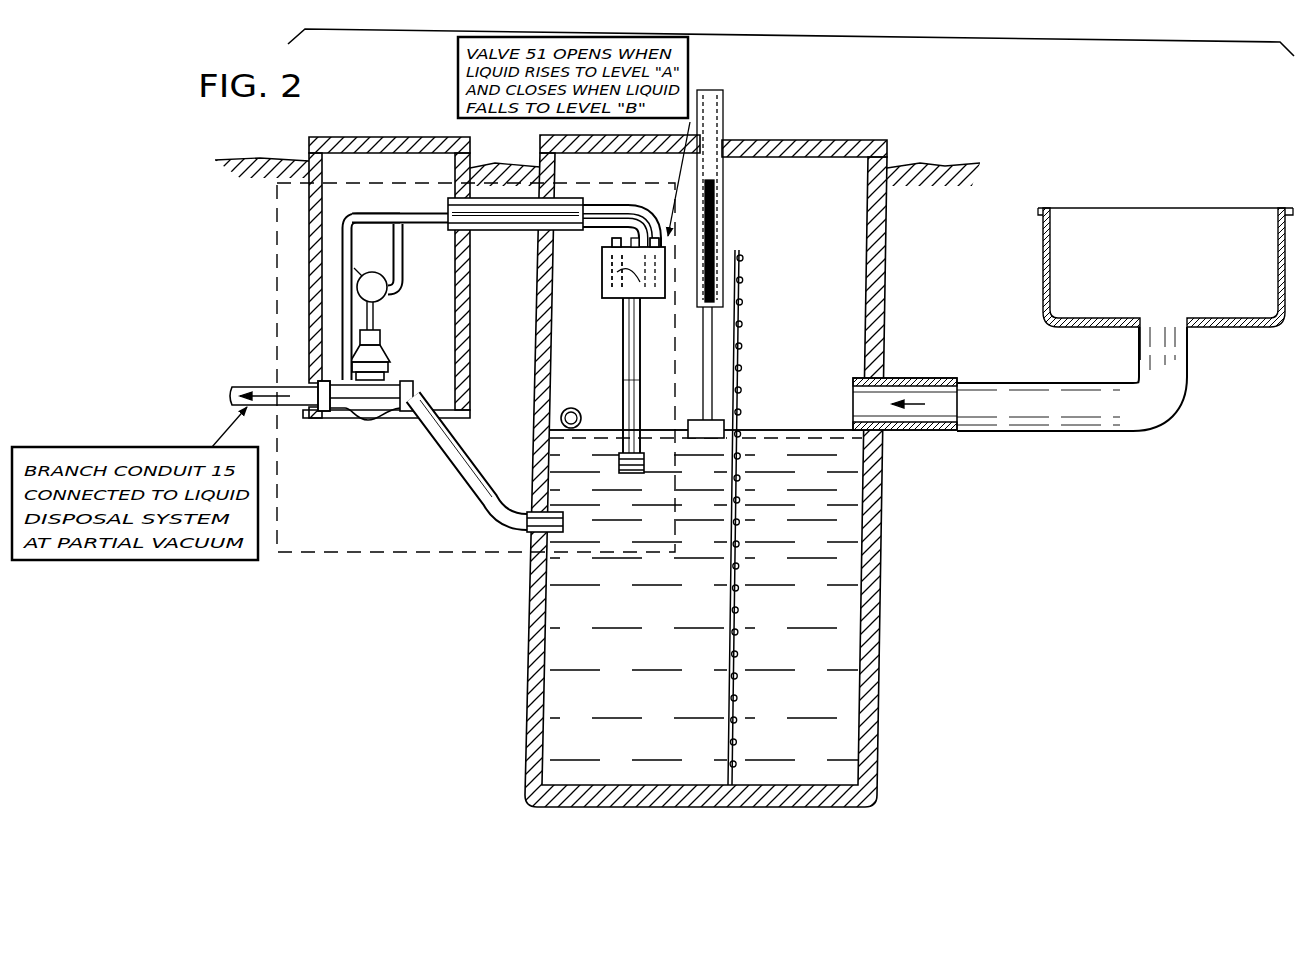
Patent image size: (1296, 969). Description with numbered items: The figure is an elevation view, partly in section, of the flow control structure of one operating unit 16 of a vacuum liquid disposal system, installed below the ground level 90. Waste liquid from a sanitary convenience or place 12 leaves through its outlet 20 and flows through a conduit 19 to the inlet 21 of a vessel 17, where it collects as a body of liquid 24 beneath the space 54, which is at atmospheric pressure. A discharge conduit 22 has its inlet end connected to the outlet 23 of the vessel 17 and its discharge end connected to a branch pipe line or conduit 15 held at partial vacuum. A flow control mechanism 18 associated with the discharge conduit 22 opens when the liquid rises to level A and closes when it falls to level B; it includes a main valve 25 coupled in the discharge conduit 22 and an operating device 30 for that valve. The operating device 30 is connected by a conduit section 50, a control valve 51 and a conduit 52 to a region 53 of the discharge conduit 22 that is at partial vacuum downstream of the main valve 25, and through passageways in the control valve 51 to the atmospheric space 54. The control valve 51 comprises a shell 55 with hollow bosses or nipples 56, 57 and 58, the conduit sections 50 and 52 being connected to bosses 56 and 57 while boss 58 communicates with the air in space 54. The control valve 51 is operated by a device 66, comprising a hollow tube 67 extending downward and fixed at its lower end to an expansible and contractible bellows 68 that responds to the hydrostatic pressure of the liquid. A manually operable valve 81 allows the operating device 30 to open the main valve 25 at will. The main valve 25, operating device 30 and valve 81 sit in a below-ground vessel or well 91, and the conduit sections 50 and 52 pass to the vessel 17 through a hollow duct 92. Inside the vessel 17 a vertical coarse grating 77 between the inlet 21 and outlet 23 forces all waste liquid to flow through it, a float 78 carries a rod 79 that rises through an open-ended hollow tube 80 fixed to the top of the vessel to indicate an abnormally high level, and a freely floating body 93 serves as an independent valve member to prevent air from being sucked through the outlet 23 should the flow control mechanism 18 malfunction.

The sanitary convenience or place 12 is at (1040, 262).
The branch pipe line or conduit 15 is at (236, 390).
The operating unit 16 is at (791, 31).
The vessel 17 is at (882, 542).
The flow control mechanism 18 is at (276, 241).
The conduit 19 is at (990, 436).
The outlet 20 is at (1190, 333).
The inlet 21 is at (888, 380).
The discharge conduit 22 is at (470, 487).
The outlet 23 is at (548, 553).
The body of liquid 24 is at (848, 608).
The main valve 25 is at (362, 421).
The operating device 30 is at (388, 356).
The conduit section 50 is at (402, 213).
The control valve 51 is at (606, 308).
The conduit 52 is at (373, 299).
The region 53 is at (322, 387).
The space 54 is at (828, 284).
The shell 55 is at (668, 298).
The hollow boss or nipple 56 is at (655, 238).
The hollow boss or nipple 57 is at (606, 280).
The hollow boss or nipple 58 is at (612, 243).
The device 66 is at (616, 394).
The hollow tube 67 is at (641, 380).
The bellows 68 is at (622, 472).
The coarse grating 77 is at (742, 352).
The float 78 is at (718, 428).
The rod 79 is at (703, 398).
The hollow tube 80 is at (724, 207).
The valve 81 is at (384, 298).
The ground level 90 is at (962, 168).
The vessel or well 91 is at (362, 141).
The hollow duct 92 is at (484, 231).
The body 93 is at (578, 400).